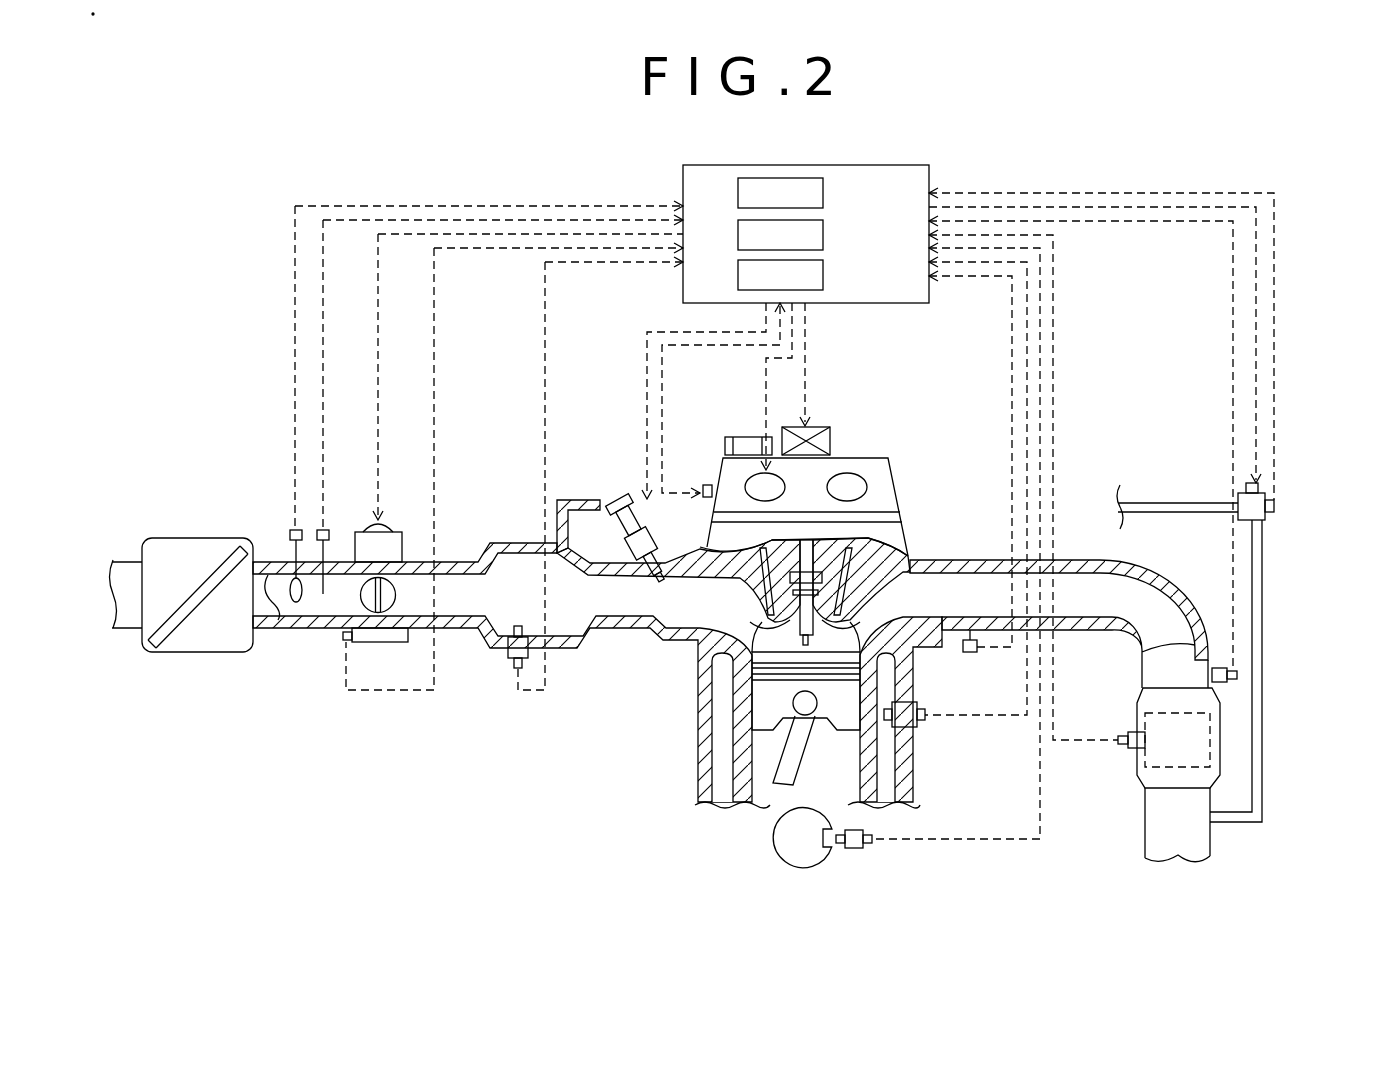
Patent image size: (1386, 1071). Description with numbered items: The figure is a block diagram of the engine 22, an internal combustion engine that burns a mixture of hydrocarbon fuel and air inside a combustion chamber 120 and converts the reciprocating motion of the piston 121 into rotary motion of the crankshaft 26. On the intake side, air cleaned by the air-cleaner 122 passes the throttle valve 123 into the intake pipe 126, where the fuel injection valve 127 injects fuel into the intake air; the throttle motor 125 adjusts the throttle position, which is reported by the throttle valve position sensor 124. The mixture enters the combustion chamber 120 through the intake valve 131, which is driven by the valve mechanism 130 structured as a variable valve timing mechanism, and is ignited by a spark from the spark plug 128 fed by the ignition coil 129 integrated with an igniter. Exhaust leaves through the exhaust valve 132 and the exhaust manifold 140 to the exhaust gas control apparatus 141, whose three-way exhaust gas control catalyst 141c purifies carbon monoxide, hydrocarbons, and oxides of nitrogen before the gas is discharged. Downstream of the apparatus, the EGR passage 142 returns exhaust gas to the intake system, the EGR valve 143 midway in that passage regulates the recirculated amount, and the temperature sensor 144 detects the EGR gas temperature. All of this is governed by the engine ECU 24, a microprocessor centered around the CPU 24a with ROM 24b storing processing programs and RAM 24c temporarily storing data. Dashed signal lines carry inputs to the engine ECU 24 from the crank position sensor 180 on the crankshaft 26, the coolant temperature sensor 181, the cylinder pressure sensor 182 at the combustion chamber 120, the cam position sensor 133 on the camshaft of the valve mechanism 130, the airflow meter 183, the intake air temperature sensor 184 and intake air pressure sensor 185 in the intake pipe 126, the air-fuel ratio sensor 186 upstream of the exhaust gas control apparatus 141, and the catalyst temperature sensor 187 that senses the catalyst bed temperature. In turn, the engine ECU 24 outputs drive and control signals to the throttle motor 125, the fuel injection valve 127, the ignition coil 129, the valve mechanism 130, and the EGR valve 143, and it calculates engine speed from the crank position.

The engine electronic control unit 24 is at (808, 165).
The CPU 24a is at (823, 195).
The ROM 24b is at (823, 235).
The RAM 24c is at (823, 276).
The engine 22 is at (915, 468).
The crankshaft 26 is at (772, 838).
The combustion chamber 120 is at (745, 650).
The piston 121 is at (767, 718).
The air-cleaner 122 is at (192, 537).
The throttle valve 123 is at (362, 597).
The throttle valve position sensor 124 is at (382, 644).
The throttle motor 125 is at (395, 526).
The intake pipe 126 is at (455, 560).
The fuel injection valve 127 is at (598, 527).
The spark plug 128 is at (815, 605).
The ignition coil 129 is at (837, 435).
The valve mechanism 130 is at (902, 491).
The intake valve 131 is at (760, 608).
The exhaust valve 132 is at (905, 610).
The cam position sensor 133 is at (712, 484).
The exhaust manifold 140 is at (1170, 592).
The exhaust gas control apparatus 141 is at (1138, 758).
The exhaust gas control catalyst 141c is at (1217, 742).
The EGR passage 142 is at (1252, 638).
The EGR valve 143 is at (1238, 494).
The temperature sensor 144 is at (1274, 522).
The crank position sensor 180 is at (864, 848).
The coolant temperature sensor 181 is at (927, 722).
The cylinder pressure sensor 182 is at (971, 654).
The airflow meter 183 is at (287, 529).
The intake air temperature sensor 184 is at (334, 529).
The intake air pressure sensor 185 is at (507, 657).
The air-fuel ratio sensor 186 is at (1238, 676).
The catalyst temperature sensor 187 is at (1125, 730).